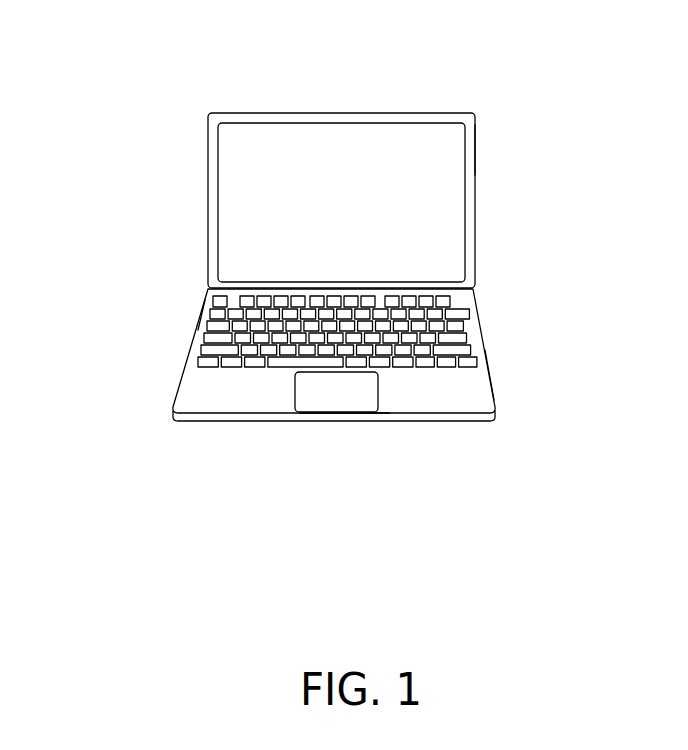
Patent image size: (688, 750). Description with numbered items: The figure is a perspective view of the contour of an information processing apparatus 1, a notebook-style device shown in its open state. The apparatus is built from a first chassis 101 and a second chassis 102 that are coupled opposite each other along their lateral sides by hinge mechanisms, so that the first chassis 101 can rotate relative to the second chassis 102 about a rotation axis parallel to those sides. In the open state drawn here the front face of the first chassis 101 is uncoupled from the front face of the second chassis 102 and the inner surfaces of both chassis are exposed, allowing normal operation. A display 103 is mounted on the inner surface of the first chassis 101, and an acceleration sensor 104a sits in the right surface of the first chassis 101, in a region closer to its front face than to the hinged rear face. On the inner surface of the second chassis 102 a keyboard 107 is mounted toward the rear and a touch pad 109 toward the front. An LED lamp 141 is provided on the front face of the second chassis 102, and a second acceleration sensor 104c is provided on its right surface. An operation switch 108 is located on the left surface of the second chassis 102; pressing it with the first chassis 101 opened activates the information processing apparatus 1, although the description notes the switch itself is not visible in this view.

The information processing apparatus 1 is at (122, 70).
The first chassis 101 is at (208, 187).
The second chassis 102 is at (412, 421).
The display 103 is at (352, 121).
The acceleration sensor 104a is at (475, 135).
The acceleration sensor 104c is at (495, 403).
The keyboard 107 is at (473, 325).
The operation switch 108 is at (203, 317).
The touch pad 109 is at (312, 395).
The LED lamp 141 is at (365, 420).